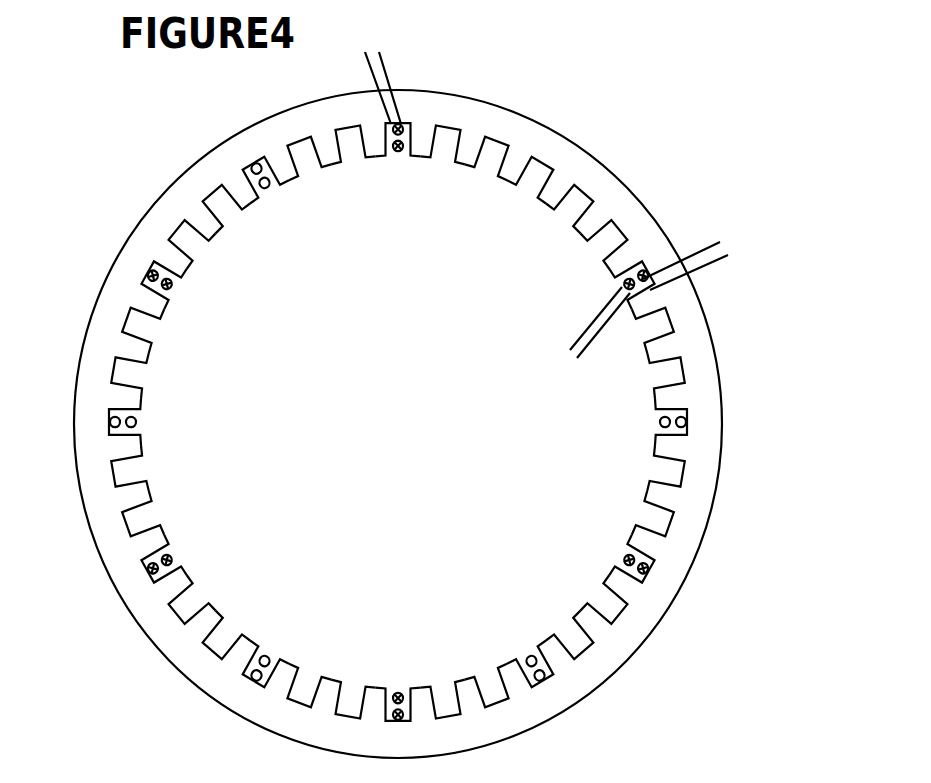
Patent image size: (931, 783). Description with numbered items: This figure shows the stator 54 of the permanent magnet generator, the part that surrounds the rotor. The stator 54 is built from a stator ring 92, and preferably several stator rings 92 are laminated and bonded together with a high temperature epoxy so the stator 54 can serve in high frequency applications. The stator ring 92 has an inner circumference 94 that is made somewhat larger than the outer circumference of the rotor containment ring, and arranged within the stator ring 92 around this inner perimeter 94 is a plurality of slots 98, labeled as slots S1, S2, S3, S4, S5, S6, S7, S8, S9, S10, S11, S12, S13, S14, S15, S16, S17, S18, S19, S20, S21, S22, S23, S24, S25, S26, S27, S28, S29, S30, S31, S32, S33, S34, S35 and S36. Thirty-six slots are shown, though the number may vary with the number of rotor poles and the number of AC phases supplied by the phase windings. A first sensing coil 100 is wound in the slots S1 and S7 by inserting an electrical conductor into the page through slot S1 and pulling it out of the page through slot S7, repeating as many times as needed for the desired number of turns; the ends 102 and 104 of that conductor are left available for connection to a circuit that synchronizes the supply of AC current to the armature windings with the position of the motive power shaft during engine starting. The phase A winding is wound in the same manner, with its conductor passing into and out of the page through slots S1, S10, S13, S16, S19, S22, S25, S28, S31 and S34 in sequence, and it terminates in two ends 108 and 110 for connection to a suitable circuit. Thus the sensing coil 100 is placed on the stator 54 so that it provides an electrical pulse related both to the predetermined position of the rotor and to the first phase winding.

The stator 54 is at (662, 145).
The stator ring 92 is at (572, 168).
The inner circumference 94 is at (180, 275).
The slots 98 is at (387, 142).
The first sensing coil 100 is at (620, 172).
The end of electrical conductor 102 is at (389, 73).
The end of electrical conductor 104 is at (707, 260).
The end of phase A winding 108 is at (589, 343).
The end of phase A winding 110 is at (268, 178).
The slot S1 is at (399, 118).
The slot S2 is at (445, 159).
The slot S3 is at (491, 169).
The slot S4 is at (533, 188).
The slot S5 is at (569, 213).
The slot S6 is at (600, 245).
The slot S7 is at (670, 317).
The slot S8 is at (642, 325).
The slot S9 is at (652, 373).
The slot S10 is at (653, 422).
The slot S11 is at (648, 471).
The slot S12 is at (638, 518).
The slot S13 is at (620, 563).
The slot S14 is at (595, 600).
The slot S15 is at (564, 632).
The slot S16 is at (528, 657).
The slot S17 is at (487, 675).
The slot S18 is at (443, 685).
The slot S19 is at (398, 687).
The slot S20 is at (351, 685).
The slot S21 is at (306, 675).
The slot S22 is at (266, 656).
The slot S23 is at (230, 631).
The slot S24 is at (199, 598).
The slot S25 is at (175, 563).
The slot S26 is at (157, 518).
The slot S27 is at (147, 471).
The slot S28 is at (145, 422).
The slot S29 is at (148, 373).
The slot S30 is at (158, 325).
The slot S31 is at (173, 283).
The slot S32 is at (200, 244).
The slot S33 is at (231, 212).
The slot S34 is at (283, 212).
The slot S35 is at (308, 168).
The slot S36 is at (352, 158).